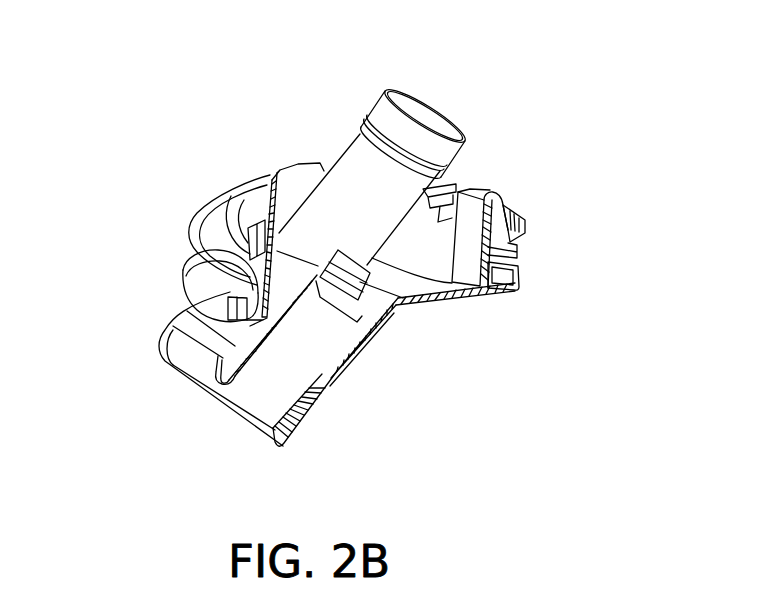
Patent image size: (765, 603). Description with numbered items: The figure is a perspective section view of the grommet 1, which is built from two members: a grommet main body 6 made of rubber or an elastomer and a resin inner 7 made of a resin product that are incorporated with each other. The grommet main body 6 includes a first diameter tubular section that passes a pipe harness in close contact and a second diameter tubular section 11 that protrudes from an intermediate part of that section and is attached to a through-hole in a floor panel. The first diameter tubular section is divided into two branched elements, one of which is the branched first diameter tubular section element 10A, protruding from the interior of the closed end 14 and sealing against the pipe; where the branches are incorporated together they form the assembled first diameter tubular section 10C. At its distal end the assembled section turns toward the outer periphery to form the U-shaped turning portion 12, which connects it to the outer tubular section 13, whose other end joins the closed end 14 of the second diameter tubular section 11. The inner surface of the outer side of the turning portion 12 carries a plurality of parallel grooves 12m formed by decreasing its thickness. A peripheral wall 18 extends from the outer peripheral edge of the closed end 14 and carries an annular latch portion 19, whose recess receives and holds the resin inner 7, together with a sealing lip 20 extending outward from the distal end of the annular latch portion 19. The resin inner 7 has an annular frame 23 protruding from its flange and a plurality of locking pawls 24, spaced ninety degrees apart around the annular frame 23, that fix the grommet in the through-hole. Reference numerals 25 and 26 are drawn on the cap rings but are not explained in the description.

The grommet 1 is at (273, 112).
The branched first diameter tubular section element 10A is at (367, 147).
The end cap sleeve 26 is at (395, 108).
The ring grooves 25 is at (402, 127).
The resin inner 7 is at (436, 216).
The locking pawl 24 is at (508, 222).
The peripheral wall 18 is at (525, 270).
The annular frame 23 is at (423, 262).
The grommet main body 6 is at (390, 337).
The outer tubular section 13 is at (367, 348).
The assembled first diameter tubular section 10C is at (355, 367).
The closed end 14 is at (311, 382).
The groove 12m is at (310, 427).
The turning portion 12 is at (207, 398).
The annular latch portion 19 is at (160, 340).
The second diameter tubular section 11 is at (190, 283).
The sealing lip 20 is at (205, 262).